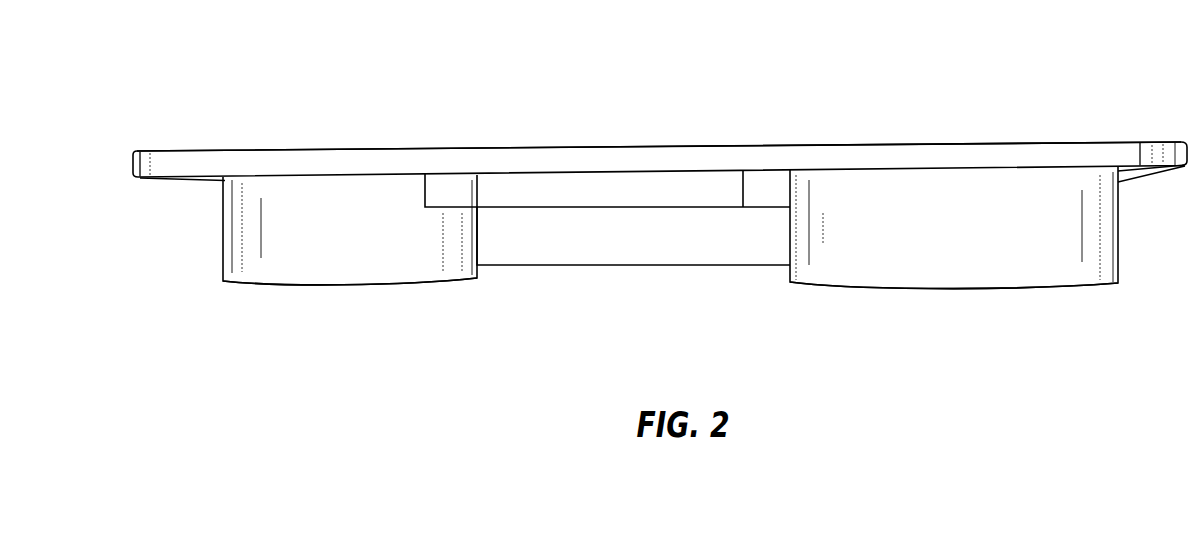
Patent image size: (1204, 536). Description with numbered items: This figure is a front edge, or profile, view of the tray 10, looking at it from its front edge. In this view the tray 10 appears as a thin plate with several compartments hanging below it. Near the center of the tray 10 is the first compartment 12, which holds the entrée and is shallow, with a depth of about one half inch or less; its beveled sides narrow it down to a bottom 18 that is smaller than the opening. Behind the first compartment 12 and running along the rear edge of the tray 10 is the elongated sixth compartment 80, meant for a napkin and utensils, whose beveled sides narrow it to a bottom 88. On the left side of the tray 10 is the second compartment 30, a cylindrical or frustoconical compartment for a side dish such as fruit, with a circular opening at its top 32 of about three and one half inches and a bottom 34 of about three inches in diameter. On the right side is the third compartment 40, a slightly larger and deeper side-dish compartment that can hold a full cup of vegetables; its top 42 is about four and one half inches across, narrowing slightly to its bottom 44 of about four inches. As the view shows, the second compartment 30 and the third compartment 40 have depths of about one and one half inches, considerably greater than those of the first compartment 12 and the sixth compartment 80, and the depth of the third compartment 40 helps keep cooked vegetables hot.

The tray 10 is at (412, 78).
The first compartment 12 is at (615, 172).
The bottom of the first compartment 18 is at (538, 207).
The second compartment 30 is at (350, 310).
The top of the second compartment 32 is at (333, 130).
The bottom of the second compartment 34 is at (407, 283).
The third compartment 40 is at (951, 306).
The top of the third compartment 42 is at (961, 136).
The bottom of the third compartment 44 is at (1035, 288).
The sixth compartment 80 is at (725, 298).
The bottom of the sixth compartment 88 is at (635, 264).